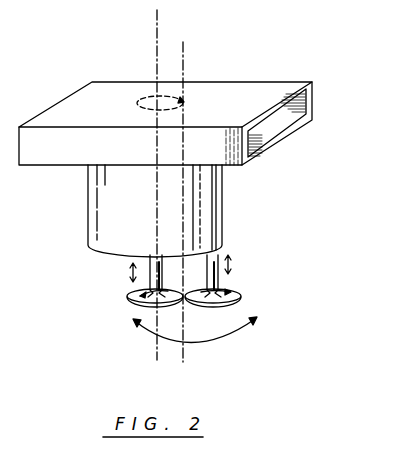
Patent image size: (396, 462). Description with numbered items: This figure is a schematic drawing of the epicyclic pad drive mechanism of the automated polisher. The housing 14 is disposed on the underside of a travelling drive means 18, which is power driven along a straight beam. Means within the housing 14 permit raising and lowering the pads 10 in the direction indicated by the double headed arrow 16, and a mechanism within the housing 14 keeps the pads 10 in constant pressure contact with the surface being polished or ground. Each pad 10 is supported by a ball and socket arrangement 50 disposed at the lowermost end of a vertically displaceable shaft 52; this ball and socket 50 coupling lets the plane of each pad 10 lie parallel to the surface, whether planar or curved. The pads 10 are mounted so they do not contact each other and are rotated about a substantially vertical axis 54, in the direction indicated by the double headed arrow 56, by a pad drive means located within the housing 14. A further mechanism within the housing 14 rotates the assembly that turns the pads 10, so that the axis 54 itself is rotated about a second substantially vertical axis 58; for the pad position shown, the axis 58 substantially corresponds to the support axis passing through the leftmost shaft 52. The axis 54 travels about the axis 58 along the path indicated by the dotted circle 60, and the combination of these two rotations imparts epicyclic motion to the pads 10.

The pads 10 is at (170, 300).
The housing 14 is at (125, 195).
The double headed arrow 16 is at (133, 272).
The travelling drive means 18 is at (280, 85).
The ball and socket arrangement 50 is at (133, 300).
The vertically displaceable shaft 52 is at (157, 262).
The axis 54 is at (183, 62).
The double headed arrow 56 is at (224, 334).
The second axis 58 is at (156, 33).
The dotted circle 60 is at (133, 100).